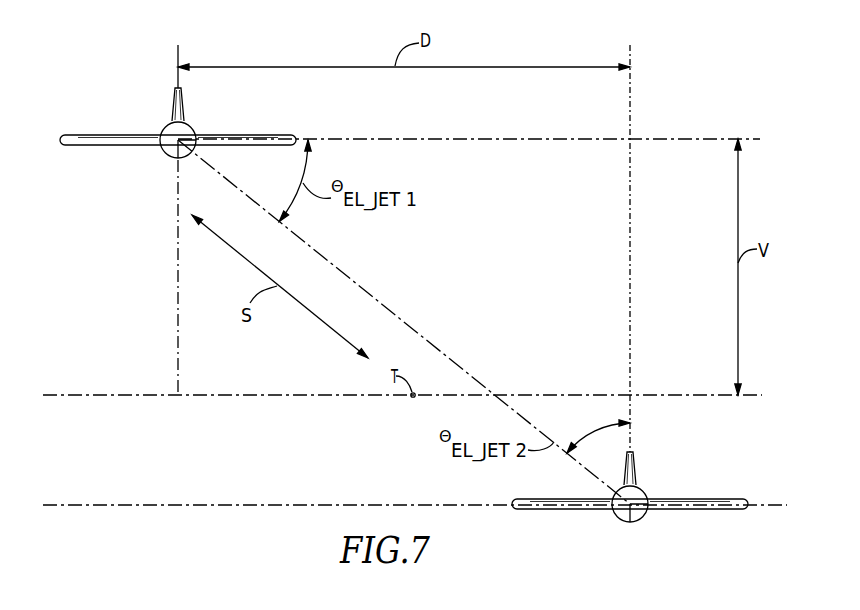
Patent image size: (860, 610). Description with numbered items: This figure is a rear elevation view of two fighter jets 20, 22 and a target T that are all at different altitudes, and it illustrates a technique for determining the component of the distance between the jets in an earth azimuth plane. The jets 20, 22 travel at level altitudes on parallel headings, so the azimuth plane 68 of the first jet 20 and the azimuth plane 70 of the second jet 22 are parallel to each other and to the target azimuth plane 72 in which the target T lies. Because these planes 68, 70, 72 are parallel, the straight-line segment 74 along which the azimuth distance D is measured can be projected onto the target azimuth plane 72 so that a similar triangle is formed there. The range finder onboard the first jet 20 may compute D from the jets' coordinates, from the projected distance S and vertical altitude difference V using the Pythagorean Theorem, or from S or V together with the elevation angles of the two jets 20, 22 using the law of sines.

The first fighter jet 20 is at (193, 125).
The second fighter jet 22 is at (641, 520).
The azimuth plane of the first jet 68 is at (667, 138).
The azimuth plane of the second jet 70 is at (772, 503).
The target azimuth plane 72 is at (684, 395).
The straight-line segment 74 is at (468, 138).